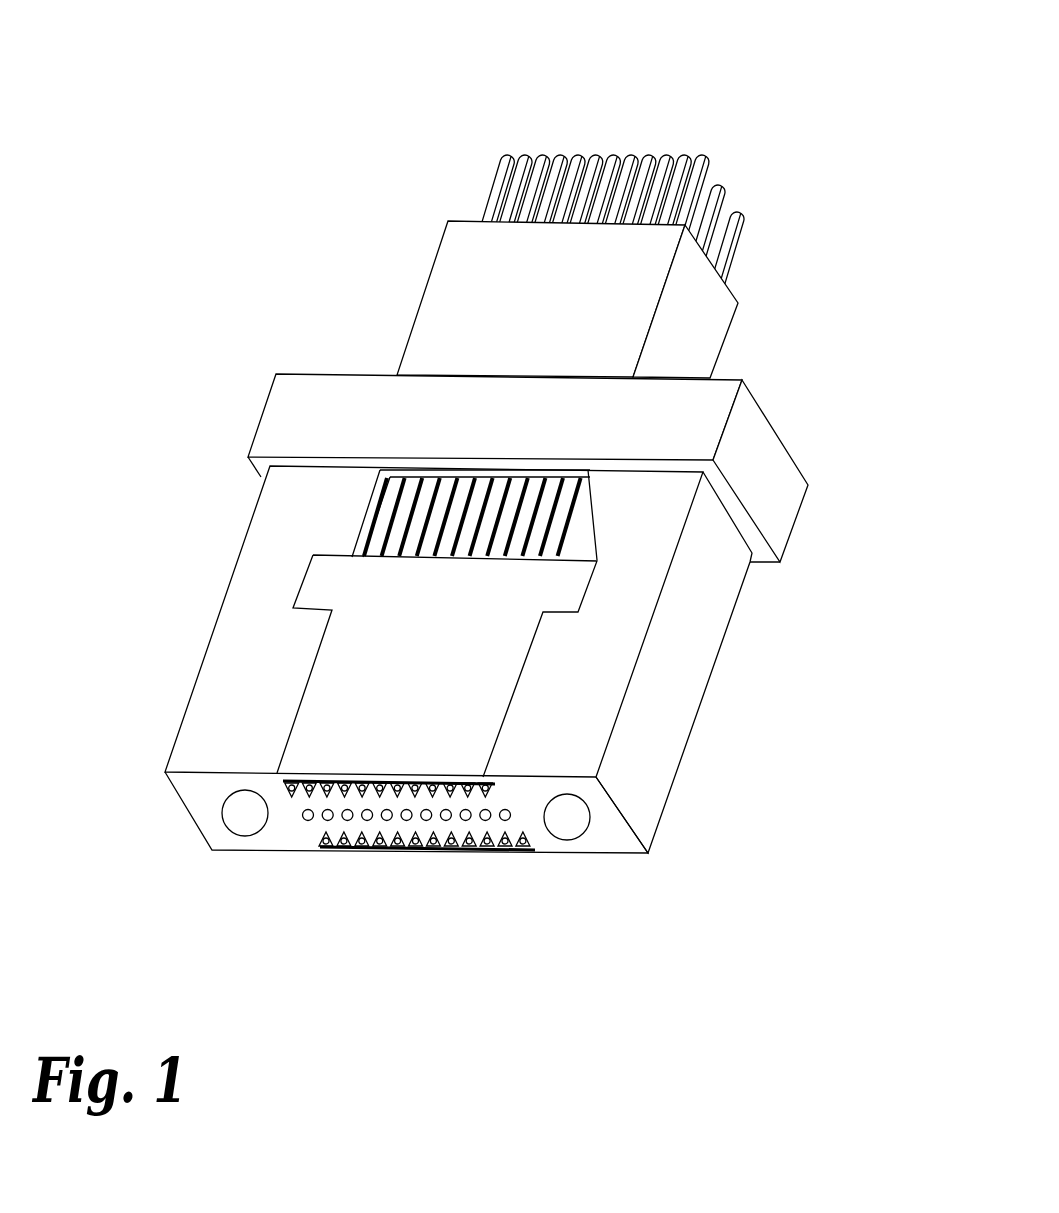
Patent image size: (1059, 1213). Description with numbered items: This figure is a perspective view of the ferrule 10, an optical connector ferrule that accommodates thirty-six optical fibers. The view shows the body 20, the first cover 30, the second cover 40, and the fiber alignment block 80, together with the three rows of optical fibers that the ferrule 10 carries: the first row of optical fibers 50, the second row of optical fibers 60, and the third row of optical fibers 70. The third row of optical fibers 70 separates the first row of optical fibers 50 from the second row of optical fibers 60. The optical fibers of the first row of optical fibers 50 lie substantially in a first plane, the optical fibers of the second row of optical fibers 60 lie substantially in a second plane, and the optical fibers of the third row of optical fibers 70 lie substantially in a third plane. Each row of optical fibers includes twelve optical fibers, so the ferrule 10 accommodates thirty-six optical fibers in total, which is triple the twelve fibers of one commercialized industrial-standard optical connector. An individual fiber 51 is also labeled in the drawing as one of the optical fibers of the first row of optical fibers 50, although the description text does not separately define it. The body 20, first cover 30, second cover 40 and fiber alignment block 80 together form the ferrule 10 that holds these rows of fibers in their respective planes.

The ferrule 10 is at (230, 577).
The body 20 is at (717, 660).
The first cover 30 is at (323, 713).
The second cover 40 is at (502, 853).
The first row of optical fibers 50 is at (707, 155).
The conductor wire 51 is at (502, 155).
The second row of optical fibers 60 is at (742, 233).
The third row of optical fibers 70 is at (727, 190).
The fiber alignment block 80 is at (738, 313).